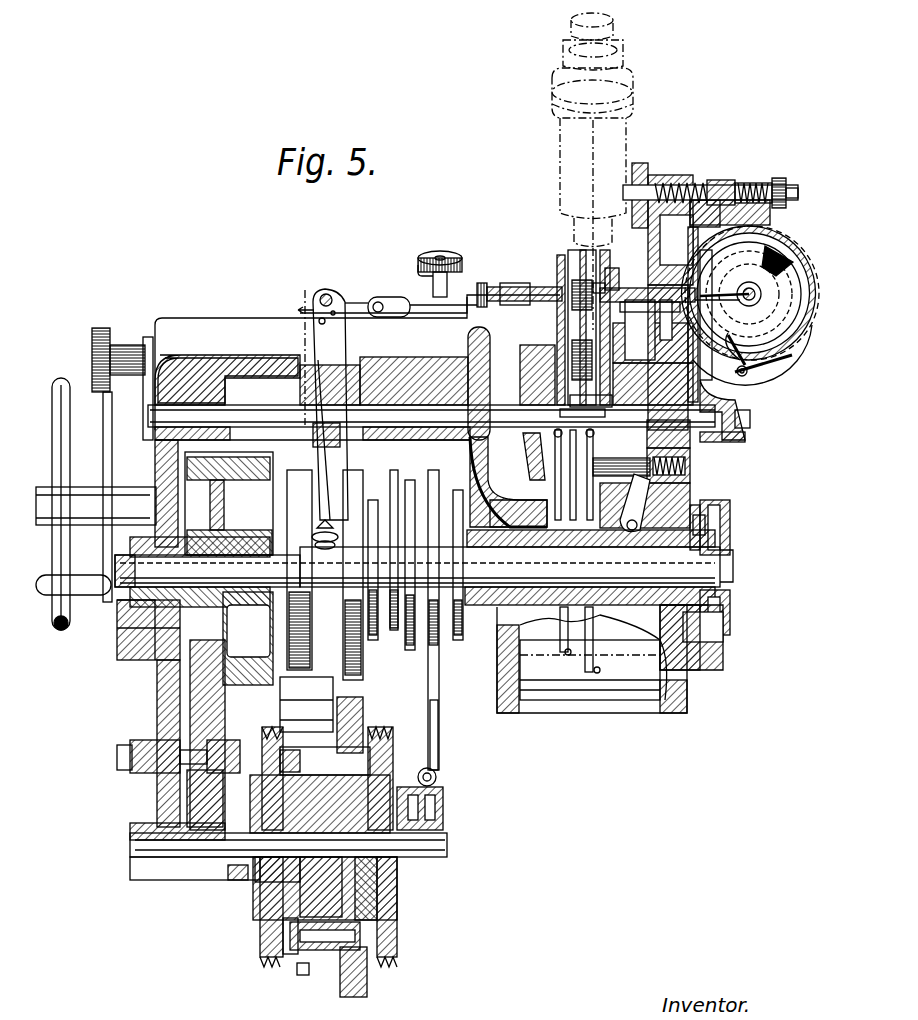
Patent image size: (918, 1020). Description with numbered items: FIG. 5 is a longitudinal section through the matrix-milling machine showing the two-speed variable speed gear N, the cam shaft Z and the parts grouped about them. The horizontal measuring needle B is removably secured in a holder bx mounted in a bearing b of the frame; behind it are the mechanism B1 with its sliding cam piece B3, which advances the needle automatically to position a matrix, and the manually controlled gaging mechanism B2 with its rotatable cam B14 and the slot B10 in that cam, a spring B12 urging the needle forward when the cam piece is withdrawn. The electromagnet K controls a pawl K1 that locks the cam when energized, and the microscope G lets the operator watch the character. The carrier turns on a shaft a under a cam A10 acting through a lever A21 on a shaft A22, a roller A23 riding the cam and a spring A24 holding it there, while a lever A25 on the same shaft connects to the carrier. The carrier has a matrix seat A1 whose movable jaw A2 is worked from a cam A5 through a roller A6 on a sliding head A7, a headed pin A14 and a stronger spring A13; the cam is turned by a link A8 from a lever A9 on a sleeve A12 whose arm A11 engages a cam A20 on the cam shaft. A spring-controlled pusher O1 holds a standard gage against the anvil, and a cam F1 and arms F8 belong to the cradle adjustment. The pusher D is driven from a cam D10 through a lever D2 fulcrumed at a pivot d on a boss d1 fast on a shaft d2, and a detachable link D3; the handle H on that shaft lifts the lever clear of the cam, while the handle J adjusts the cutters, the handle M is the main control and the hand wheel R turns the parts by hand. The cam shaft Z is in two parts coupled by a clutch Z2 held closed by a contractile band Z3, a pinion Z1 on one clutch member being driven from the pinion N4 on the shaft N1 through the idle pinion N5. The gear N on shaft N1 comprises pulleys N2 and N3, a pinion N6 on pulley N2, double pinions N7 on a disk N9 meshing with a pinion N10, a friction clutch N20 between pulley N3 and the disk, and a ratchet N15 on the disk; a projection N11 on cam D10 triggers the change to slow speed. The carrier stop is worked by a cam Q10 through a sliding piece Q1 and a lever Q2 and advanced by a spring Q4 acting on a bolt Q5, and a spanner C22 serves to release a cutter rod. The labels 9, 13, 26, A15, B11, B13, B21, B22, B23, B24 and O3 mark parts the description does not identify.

The pivot d is at (306, 402).
The boss d1 is at (330, 423).
The shaft d2 is at (262, 400).
The section line 13 is at (302, 653).
The pusher D is at (440, 314).
The lever D2 is at (336, 345).
The detachable link D3 is at (382, 298).
The cam D10 is at (305, 515).
The handle J is at (440, 252).
The spring controlled pusher O1 is at (484, 283).
The seat A1 is at (588, 320).
The movable jaw A2 is at (560, 300).
The cam A5 is at (414, 381).
The roller A6 is at (555, 362).
The sliding head A7 is at (560, 318).
The link A8 is at (552, 455).
The lever A9 is at (584, 700).
The cam A10 is at (410, 482).
The arm A11 is at (438, 702).
The sleeve A12 is at (530, 715).
The spring A13 is at (505, 492).
The headed pin A14 is at (653, 379).
The block A15 is at (653, 331).
The cam A20 is at (515, 552).
The lever A21 is at (440, 748).
The shaft A22 is at (645, 700).
The roller A23 is at (393, 472).
The spring A24 is at (438, 779).
The lever A25 is at (730, 596).
The spanner C22 is at (103, 345).
The handle H is at (140, 431).
The main control handle M is at (78, 590).
The hand wheel R is at (70, 622).
The cam shaft Z is at (728, 582).
The pinion Z1 is at (175, 690).
The clutch Z2 is at (130, 636).
The contractile band Z3 is at (190, 716).
The variable speed gear N is at (398, 870).
The shaft N1 is at (448, 845).
The pulley N2 is at (398, 950).
The pulley N3 is at (290, 935).
The pinion N4 is at (212, 866).
The idle pinion N5 is at (187, 795).
The pinion N6 is at (378, 882).
The double pinions N7 is at (367, 965).
The disk N9 is at (300, 895).
The pinion N10 is at (340, 758).
The projection N11 is at (300, 622).
The ratchet N15 is at (302, 976).
The friction clutch N20 is at (262, 884).
The cam F1 is at (515, 456).
The arms F8 is at (582, 413).
The microscope G is at (572, 141).
The nut 9 is at (599, 284).
The bearing b is at (620, 275).
The holder bx is at (656, 180).
The measuring needle B is at (784, 190).
The mechanism B1 is at (655, 278).
The gaging mechanism B2 is at (750, 308).
The sliding cam piece B3 is at (762, 188).
The slot B10 is at (735, 313).
The hub B11 is at (762, 292).
The spring B12 is at (752, 262).
The knob B13 is at (787, 200).
The cam B14 is at (744, 336).
The plate B21 is at (730, 212).
The flange B22 is at (745, 440).
The spring bolt B23 is at (655, 178).
The nut B24 is at (716, 180).
The tip 26 is at (796, 186).
The electric control device K is at (748, 398).
The pawl K1 is at (787, 376).
The shaft a is at (752, 418).
The sliding piece Q1 is at (715, 548).
The lever Q2 is at (652, 497).
The spring Q4 is at (700, 464).
The bolt Q5 is at (660, 482).
The cam Q10 is at (728, 634).
The column O3 is at (730, 530).